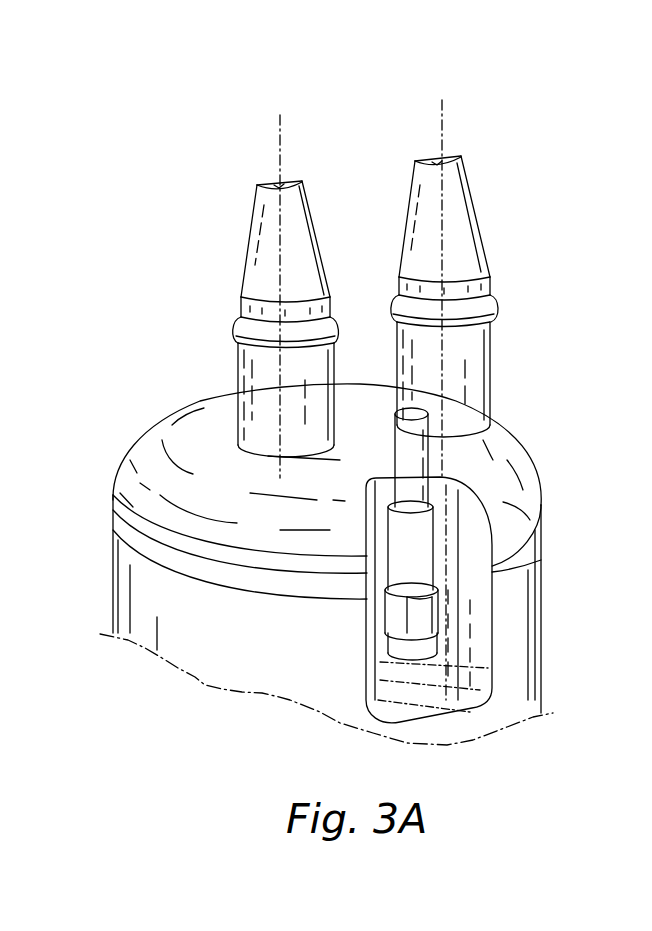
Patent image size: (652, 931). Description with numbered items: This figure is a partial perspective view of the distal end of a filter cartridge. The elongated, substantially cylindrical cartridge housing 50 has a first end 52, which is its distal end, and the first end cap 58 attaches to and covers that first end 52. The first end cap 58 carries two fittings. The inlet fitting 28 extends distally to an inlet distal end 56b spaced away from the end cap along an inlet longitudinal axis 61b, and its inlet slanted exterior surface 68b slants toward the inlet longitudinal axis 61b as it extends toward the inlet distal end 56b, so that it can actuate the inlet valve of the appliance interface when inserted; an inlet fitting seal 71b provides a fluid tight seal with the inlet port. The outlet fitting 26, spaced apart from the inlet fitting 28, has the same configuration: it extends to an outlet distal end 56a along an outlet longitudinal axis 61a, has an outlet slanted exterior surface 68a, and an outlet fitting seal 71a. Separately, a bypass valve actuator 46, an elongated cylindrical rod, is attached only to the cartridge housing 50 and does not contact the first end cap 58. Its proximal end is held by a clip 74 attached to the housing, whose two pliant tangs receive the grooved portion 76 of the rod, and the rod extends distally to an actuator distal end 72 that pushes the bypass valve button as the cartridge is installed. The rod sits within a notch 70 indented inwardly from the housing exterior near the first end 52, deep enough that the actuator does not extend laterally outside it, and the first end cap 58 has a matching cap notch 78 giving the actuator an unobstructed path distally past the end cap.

The outlet fitting 26 is at (493, 361).
The inlet fitting 28 is at (237, 368).
The bypass valve actuator 46 is at (425, 546).
The cartridge housing 50 is at (545, 700).
The first end 52 is at (530, 610).
The outlet distal end 56a is at (437, 160).
The inlet distal end 56b is at (278, 184).
The first end cap 58 is at (530, 458).
The outlet longitudinal axis 61a is at (442, 137).
The inlet longitudinal axis 61b is at (281, 137).
The outlet slanted exterior surface 68a is at (473, 258).
The inlet slanted exterior surface 68b is at (302, 270).
The notch 70 is at (470, 641).
The outlet fitting seal 71a is at (493, 302).
The inlet fitting seal 71b is at (238, 327).
The actuator distal end 72 is at (422, 414).
The clip 74 is at (392, 620).
The grooved portion 76 is at (417, 618).
The cap notch 78 is at (470, 507).